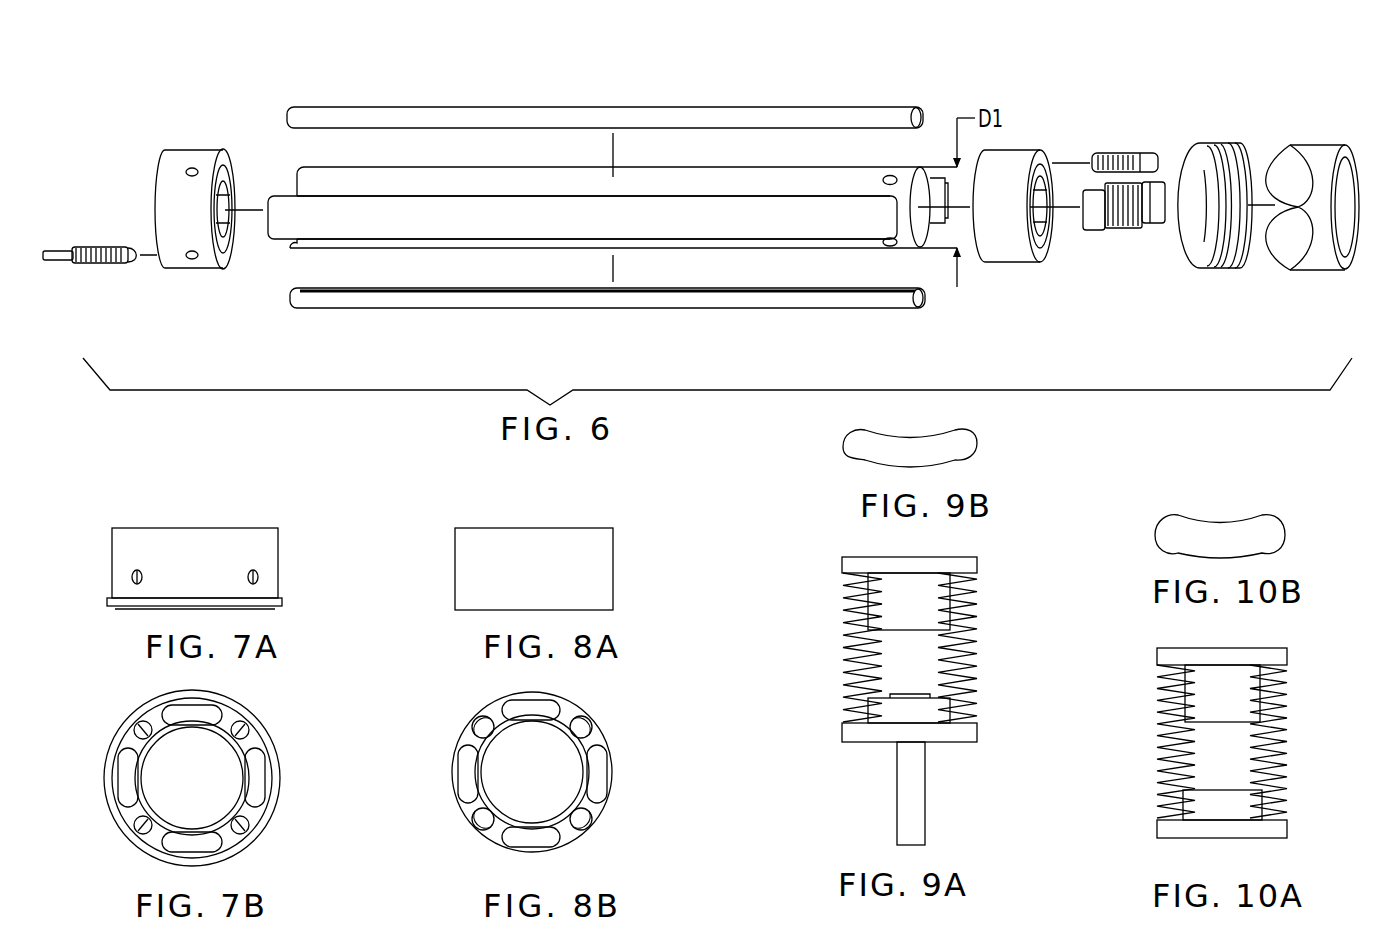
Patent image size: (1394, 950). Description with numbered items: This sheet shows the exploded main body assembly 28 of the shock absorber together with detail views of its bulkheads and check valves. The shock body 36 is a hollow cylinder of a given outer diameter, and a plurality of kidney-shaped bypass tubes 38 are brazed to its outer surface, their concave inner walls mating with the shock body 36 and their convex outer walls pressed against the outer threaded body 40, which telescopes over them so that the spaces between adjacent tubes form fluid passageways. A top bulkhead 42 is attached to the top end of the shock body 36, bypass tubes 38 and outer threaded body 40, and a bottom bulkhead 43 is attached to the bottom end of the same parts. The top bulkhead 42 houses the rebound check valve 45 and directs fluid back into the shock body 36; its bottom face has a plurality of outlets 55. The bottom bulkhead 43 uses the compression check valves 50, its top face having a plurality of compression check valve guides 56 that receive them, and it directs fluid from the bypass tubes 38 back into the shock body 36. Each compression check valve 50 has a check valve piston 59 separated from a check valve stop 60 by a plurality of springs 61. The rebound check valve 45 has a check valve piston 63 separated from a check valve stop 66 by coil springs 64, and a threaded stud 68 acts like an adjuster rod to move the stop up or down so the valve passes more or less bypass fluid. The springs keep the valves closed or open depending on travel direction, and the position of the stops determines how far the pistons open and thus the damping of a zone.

In FIG. 6, the lighting fixture assembly 28 is at (1034, 85).
In FIG. 6, the shock body 36 is at (297, 168).
In FIG. 6, the bypass tubes 38 is at (535, 112).
In FIG. 6, the outer threaded body 40 is at (1208, 145).
In FIG. 6, the top bulkhead 42 is at (173, 166).
In FIG. 7A, the top bulkhead 42 is at (211, 573).
In FIG. 6, the bottom bulkhead 43 is at (997, 245).
In FIG. 8A, the bottom bulkhead 43 is at (549, 574).
In FIG. 8B, the bottom bulkhead 43 is at (575, 713).
In FIG. 6, the rebound check valve 45 is at (108, 240).
In FIG. 6, the compression check valves 50 is at (1118, 145).
In FIG. 7B, the outlets 55 is at (247, 727).
In FIG. 8B, the compression check valve guides 56 is at (487, 713).
In FIG. 10B, the check valve piston 59 is at (1234, 549).
In FIG. 10A, the check valve piston 59 is at (1234, 698).
In FIG. 10A, the check valve stop 60 is at (1234, 828).
In FIG. 10A, the springs 61 is at (1158, 757).
In FIG. 9B, the check valve piston 63 is at (922, 461).
In FIG. 9A, the check valve piston 63 is at (921, 604).
In FIG. 9A, the coil springs 64 is at (843, 645).
In FIG. 9A, the check valve stop 66 is at (921, 728).
In FIG. 9A, the threaded stud 68 is at (907, 795).